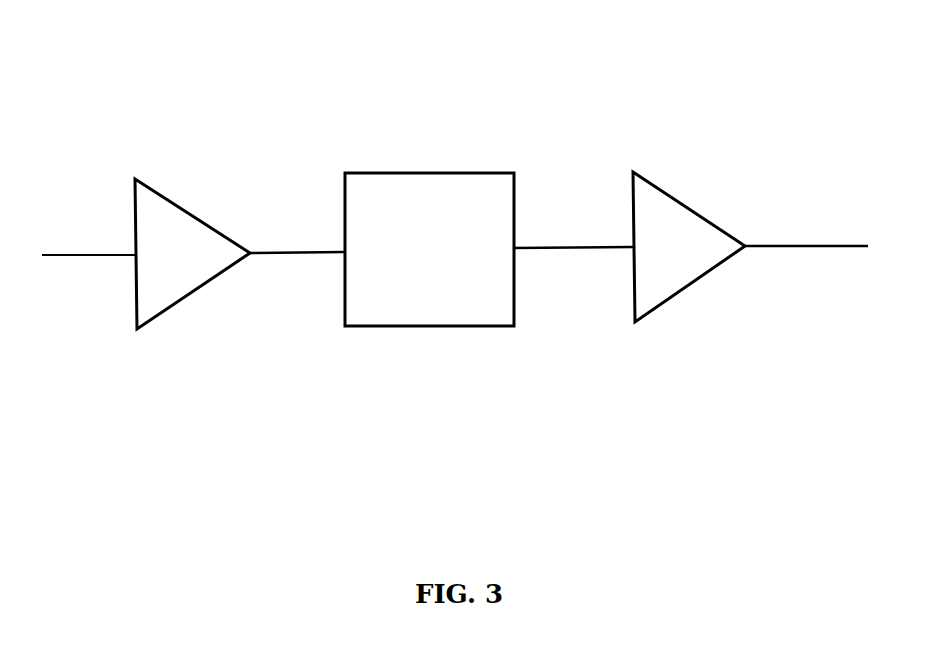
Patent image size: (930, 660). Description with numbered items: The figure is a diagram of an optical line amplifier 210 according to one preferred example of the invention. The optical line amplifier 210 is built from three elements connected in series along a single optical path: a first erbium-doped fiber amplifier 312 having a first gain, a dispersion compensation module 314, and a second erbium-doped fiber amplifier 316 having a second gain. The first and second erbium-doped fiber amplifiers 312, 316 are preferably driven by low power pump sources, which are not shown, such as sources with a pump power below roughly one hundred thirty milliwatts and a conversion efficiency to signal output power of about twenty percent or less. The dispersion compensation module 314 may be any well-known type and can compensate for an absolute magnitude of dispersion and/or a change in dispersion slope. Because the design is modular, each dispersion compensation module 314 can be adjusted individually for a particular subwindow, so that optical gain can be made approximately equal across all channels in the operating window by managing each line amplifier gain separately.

The optical line amplifier 210 is at (432, 89).
The first erbium-doped fiber amplifier 312 is at (172, 193).
The dispersion compensation module 314 is at (515, 185).
The second erbium-doped fiber amplifier 316 is at (700, 202).